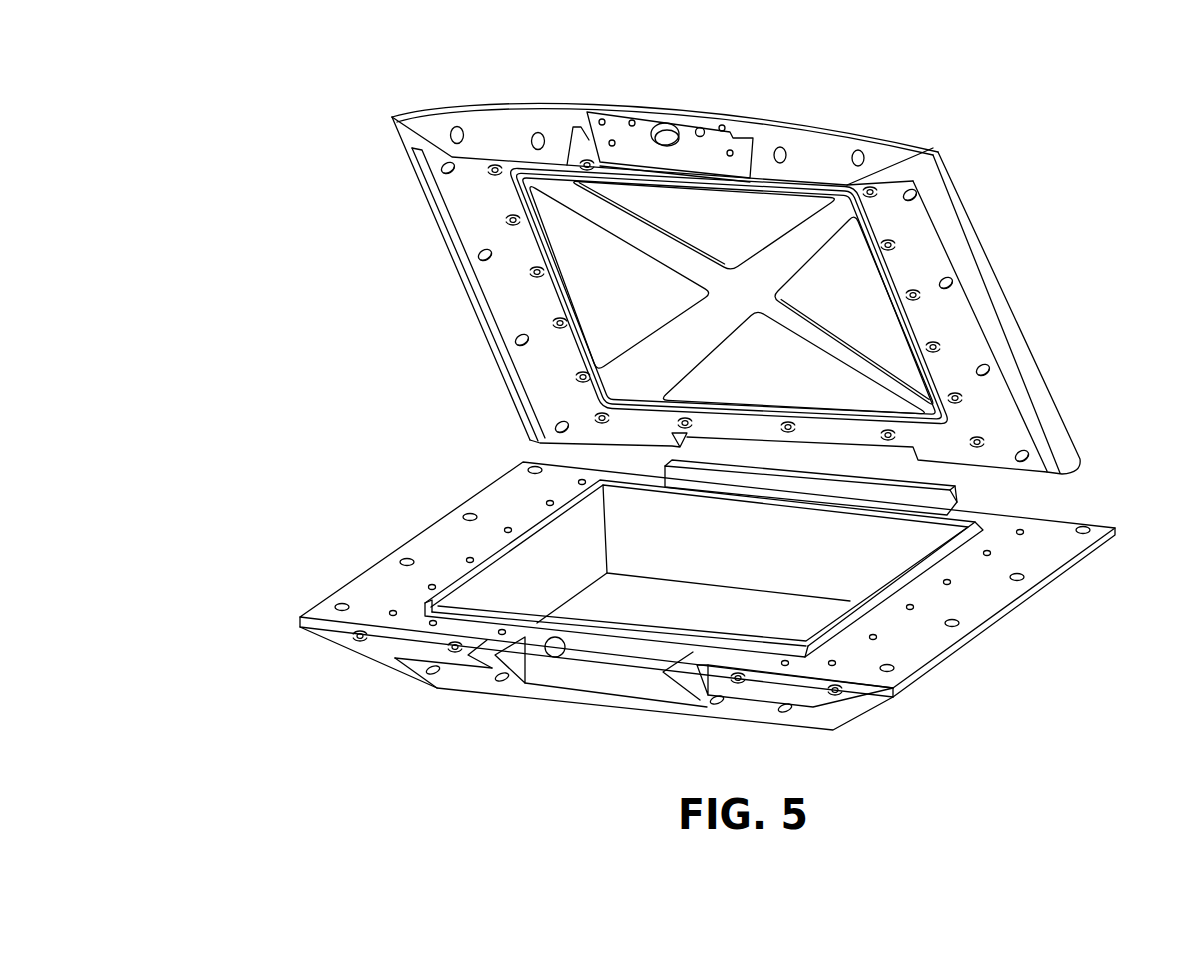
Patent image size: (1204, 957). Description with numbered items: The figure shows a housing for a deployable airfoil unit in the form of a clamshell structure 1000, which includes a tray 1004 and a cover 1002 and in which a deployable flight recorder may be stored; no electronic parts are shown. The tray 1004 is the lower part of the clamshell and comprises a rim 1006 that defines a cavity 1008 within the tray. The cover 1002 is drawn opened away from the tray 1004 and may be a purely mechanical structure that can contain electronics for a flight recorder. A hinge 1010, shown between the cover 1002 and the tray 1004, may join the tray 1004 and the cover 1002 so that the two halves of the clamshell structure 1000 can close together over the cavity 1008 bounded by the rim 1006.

The clamshell structure 1000 is at (333, 112).
The cover 1002 is at (477, 278).
The tray 1004 is at (373, 563).
The rim 1006 is at (342, 607).
The cavity 1008 is at (767, 570).
The hinge 1010 is at (810, 493).